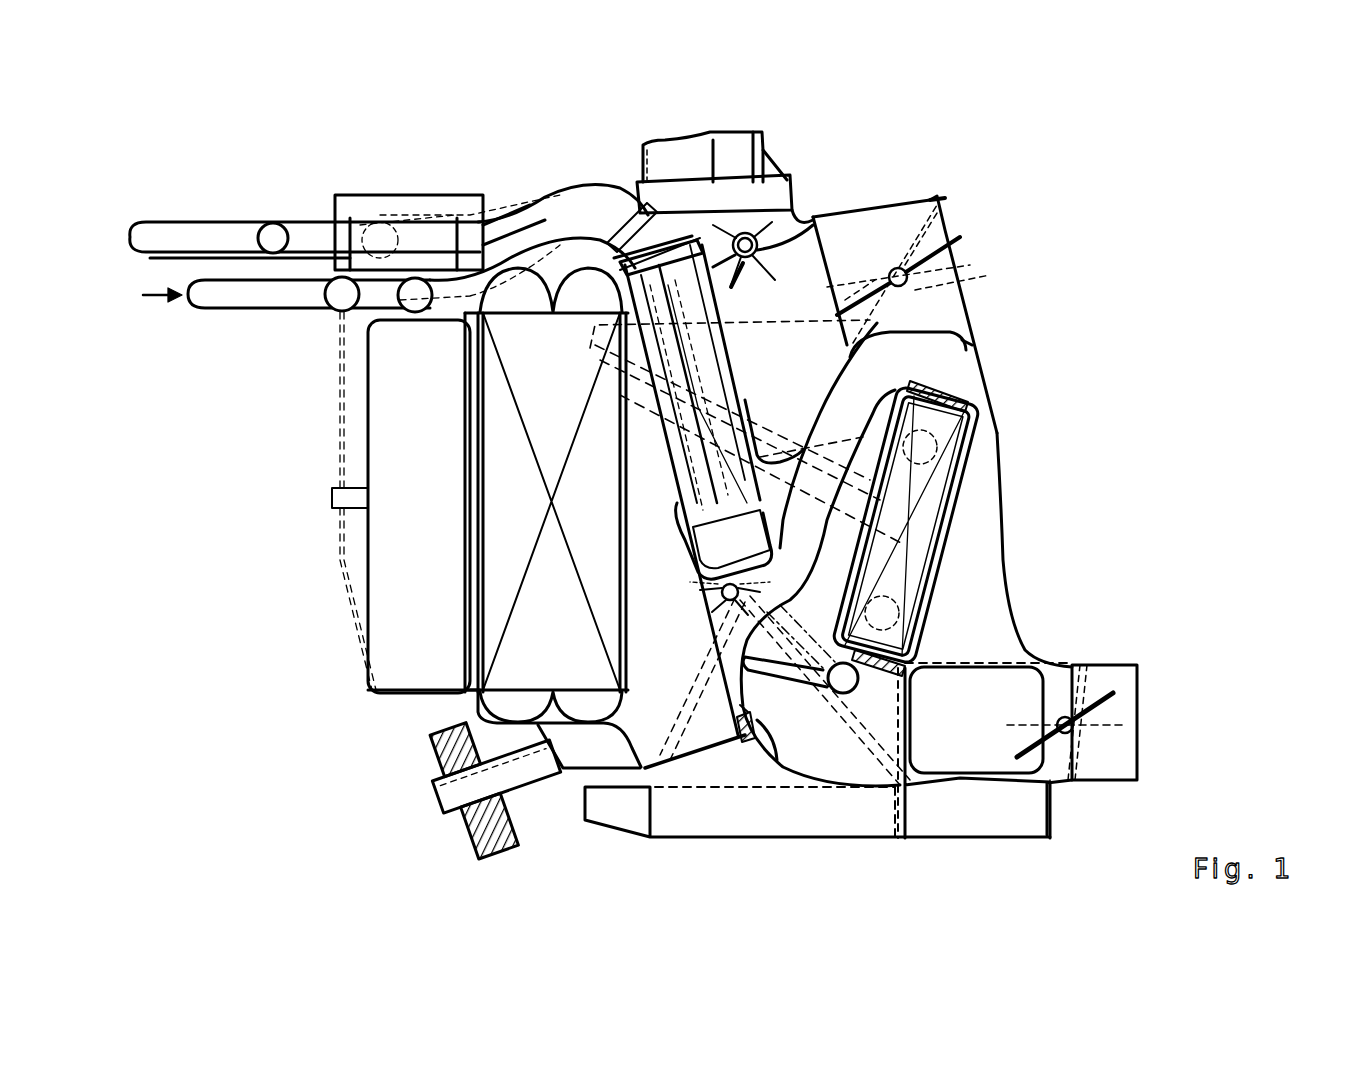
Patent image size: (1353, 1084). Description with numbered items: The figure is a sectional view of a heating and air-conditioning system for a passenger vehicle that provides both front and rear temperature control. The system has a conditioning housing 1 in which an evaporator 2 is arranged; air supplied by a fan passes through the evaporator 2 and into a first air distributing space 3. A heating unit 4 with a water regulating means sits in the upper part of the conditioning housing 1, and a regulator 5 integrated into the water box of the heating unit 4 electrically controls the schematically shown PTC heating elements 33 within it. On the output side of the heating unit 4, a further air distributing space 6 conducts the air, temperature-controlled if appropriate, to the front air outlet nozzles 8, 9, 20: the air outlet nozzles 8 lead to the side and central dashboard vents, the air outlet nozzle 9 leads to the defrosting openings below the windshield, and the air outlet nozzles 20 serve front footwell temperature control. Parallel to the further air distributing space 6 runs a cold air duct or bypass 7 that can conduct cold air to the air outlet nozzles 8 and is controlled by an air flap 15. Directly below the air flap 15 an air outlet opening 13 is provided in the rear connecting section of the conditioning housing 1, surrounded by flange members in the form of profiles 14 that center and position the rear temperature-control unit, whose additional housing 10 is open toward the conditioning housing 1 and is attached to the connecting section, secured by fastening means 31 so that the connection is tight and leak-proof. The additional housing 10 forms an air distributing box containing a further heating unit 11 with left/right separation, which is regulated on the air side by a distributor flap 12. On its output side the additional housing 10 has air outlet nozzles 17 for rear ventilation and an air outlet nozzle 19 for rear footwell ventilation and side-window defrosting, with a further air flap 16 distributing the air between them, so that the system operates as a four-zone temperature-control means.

The conditioning housing 1 is at (682, 770).
The evaporator 2 is at (498, 441).
The first air distributing space 3 is at (660, 620).
The heating unit 4 is at (692, 455).
The regulator 5 is at (733, 558).
The further air distributing space 6 is at (805, 324).
The cold air duct or bypass 7 is at (808, 534).
The air outlet nozzles 8 is at (990, 290).
The air outlet nozzle 9 is at (698, 110).
The additional housing 10 is at (1030, 548).
The further heating unit 11 is at (935, 493).
The distributor flap 12 is at (790, 675).
The air outlet opening 13 is at (740, 707).
The flange members or profiles 14 is at (923, 372).
The air flap 15 is at (722, 600).
The further air flap 16 is at (1090, 690).
The air outlet nozzles 17 is at (1130, 754).
The air outlet nozzle 19 is at (965, 752).
The air outlet nozzles 20 is at (840, 815).
The fastening means 31 is at (937, 383).
The PTC heating elements 33 is at (745, 288).